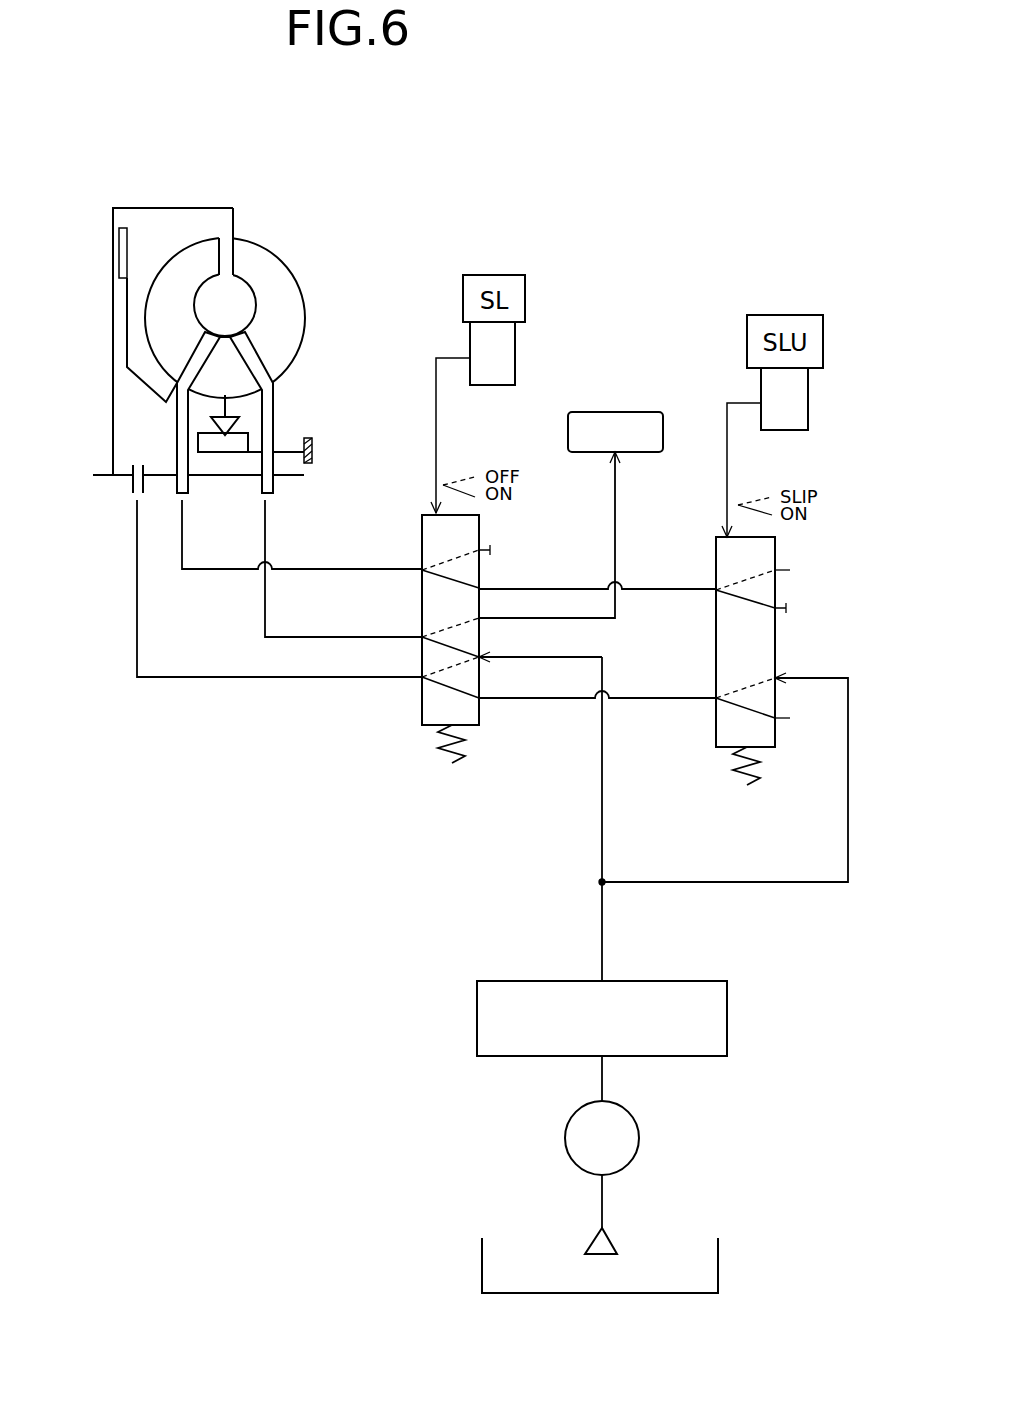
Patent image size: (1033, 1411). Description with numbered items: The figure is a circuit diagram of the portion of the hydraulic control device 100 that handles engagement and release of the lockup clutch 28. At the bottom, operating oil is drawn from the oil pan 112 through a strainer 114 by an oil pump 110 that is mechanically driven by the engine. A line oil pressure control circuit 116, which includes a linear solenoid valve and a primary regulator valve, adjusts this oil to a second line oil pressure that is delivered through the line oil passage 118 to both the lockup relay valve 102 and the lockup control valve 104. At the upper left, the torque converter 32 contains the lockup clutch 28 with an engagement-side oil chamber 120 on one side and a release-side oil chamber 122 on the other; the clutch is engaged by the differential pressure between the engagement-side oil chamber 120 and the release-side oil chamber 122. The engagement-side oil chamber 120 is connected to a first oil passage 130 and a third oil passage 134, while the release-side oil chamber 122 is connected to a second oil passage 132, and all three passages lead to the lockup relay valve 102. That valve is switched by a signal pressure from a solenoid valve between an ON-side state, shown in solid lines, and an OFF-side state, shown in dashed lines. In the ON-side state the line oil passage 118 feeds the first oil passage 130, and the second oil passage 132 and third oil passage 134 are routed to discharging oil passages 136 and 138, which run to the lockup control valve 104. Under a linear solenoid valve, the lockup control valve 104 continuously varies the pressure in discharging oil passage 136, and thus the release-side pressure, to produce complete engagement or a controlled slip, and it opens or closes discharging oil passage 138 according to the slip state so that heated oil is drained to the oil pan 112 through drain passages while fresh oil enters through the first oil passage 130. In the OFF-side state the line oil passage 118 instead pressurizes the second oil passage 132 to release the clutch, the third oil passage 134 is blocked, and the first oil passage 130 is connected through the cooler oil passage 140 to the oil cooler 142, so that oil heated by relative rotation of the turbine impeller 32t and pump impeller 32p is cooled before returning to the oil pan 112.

The hydraulic control device 100 is at (663, 535).
The lockup clutch 28 is at (128, 319).
The torque converter 32 is at (206, 330).
The pump impeller 32p is at (278, 303).
The turbine impeller 32t is at (160, 317).
The engagement-side oil chamber 120 is at (160, 222).
The release-side oil chamber 122 is at (128, 407).
The first oil passage 130 is at (267, 535).
The second oil passage 132 is at (137, 600).
The third oil passage 134 is at (207, 572).
The lockup relay valve 102 is at (403, 712).
The lockup control valve 104 is at (798, 757).
The discharging oil passage 136 is at (652, 700).
The discharging oil passage 138 is at (653, 595).
The cooler oil passage 140 is at (617, 523).
The oil cooler 142 is at (603, 417).
The line oil passage 118 is at (600, 918).
The line oil pressure control circuit 116 is at (567, 987).
The oil pump 110 is at (630, 1130).
The oil pan 112 is at (482, 1260).
The strainer 114 is at (607, 1242).